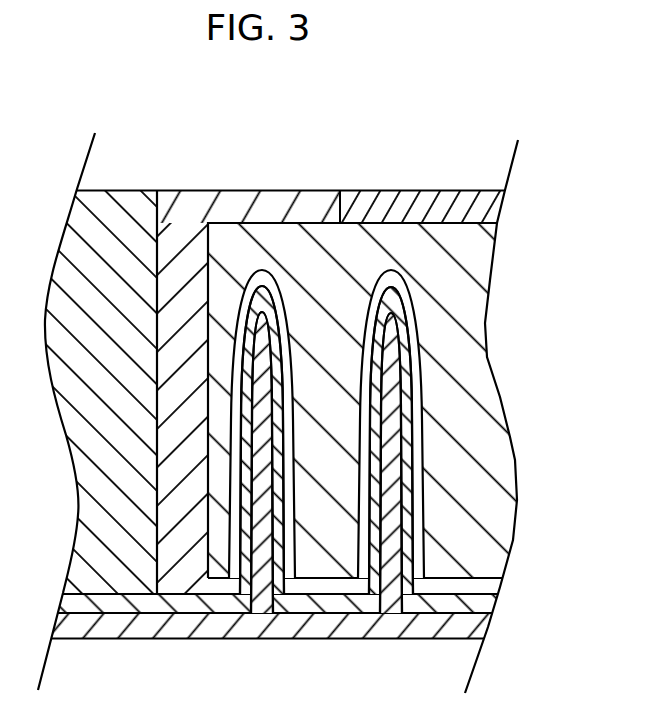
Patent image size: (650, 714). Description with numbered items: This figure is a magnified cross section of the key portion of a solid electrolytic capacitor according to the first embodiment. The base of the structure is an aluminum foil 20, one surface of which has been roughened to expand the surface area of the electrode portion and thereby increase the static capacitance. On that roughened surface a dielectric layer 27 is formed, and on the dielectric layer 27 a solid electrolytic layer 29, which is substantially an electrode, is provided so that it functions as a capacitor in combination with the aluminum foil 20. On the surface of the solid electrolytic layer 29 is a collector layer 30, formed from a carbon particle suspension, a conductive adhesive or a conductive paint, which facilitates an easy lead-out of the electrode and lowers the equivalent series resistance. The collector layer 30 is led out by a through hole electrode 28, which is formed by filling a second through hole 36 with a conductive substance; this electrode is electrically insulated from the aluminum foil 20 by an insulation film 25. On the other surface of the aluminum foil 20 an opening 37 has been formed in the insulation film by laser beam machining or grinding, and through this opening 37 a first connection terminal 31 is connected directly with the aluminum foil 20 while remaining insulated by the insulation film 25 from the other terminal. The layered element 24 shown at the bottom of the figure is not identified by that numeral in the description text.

The aluminum foil 20 is at (466, 352).
The bottom layer 24 is at (224, 470).
The insulation film 25 is at (245, 210).
The dielectric layer 27 is at (421, 408).
The through hole electrode 28 is at (108, 217).
The solid electrolytic layer 29 is at (409, 466).
The collector layer 30 is at (398, 515).
The first connection terminal 31 is at (413, 210).
The second through hole 36 is at (154, 490).
The opening 37 is at (339, 202).